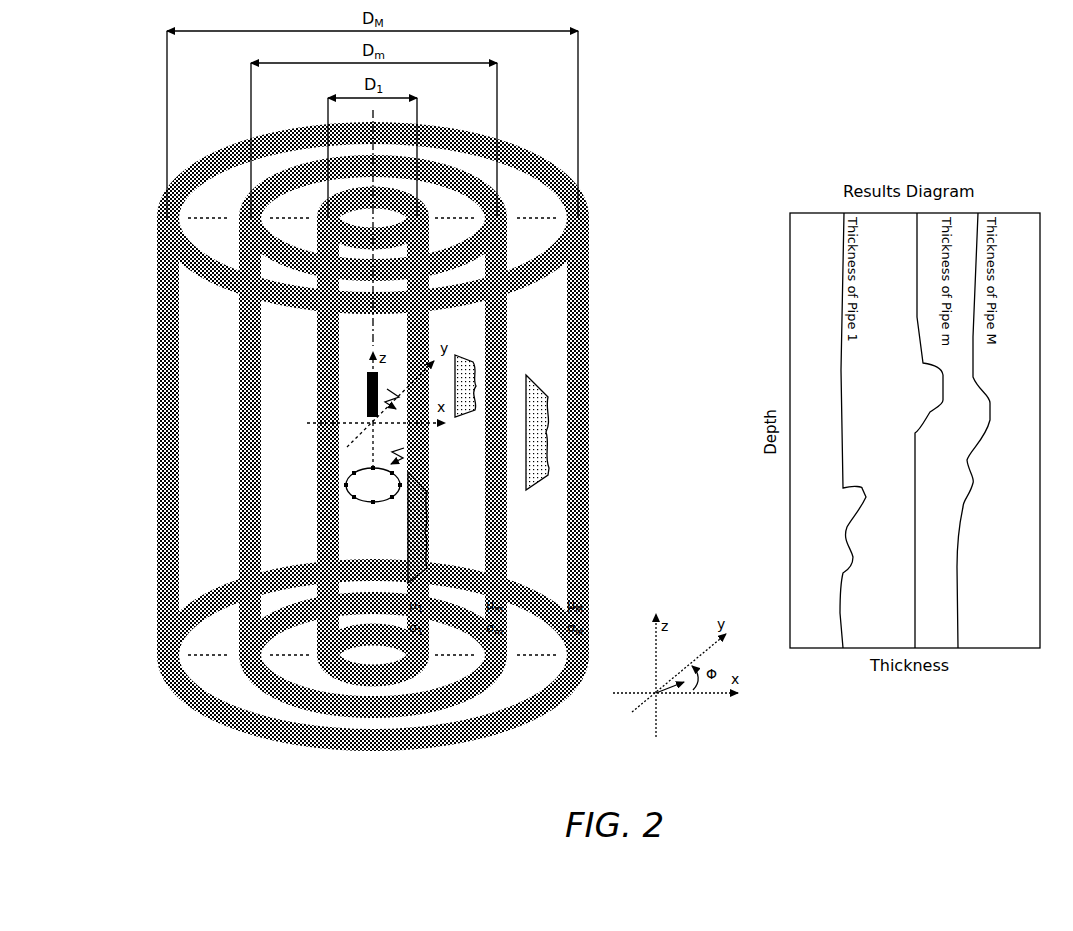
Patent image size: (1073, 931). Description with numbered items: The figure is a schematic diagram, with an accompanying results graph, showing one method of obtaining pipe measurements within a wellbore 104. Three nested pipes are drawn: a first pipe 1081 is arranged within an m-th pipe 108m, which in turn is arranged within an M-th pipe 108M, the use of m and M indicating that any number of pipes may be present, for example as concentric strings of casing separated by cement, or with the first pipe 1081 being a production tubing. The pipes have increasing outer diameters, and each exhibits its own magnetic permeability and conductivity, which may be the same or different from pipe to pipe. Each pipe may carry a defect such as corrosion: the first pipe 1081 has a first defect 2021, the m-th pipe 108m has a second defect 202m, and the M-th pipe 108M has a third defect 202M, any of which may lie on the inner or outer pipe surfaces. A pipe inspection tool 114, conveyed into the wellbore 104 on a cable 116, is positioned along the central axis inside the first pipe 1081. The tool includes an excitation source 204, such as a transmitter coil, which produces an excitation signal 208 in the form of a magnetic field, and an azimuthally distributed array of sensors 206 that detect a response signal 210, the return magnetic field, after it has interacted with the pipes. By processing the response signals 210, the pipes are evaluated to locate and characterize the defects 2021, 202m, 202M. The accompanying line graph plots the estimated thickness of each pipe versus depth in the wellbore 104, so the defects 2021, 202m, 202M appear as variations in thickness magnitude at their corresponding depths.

The wellbore 104 is at (149, 96).
The M-th pipe 108M is at (171, 524).
The m-th pipe 108m is at (253, 570).
The first pipe 1081 is at (329, 627).
The pipe inspection tool 114 is at (358, 366).
The cable 116 is at (372, 236).
The excitation source 204 is at (366, 392).
The sensors 206 is at (348, 480).
The excitation signal 208 is at (389, 388).
The response signal 210 is at (404, 455).
The second defect 202m is at (470, 362).
The third defect 202M is at (546, 468).
The first defect 2021 is at (425, 495).